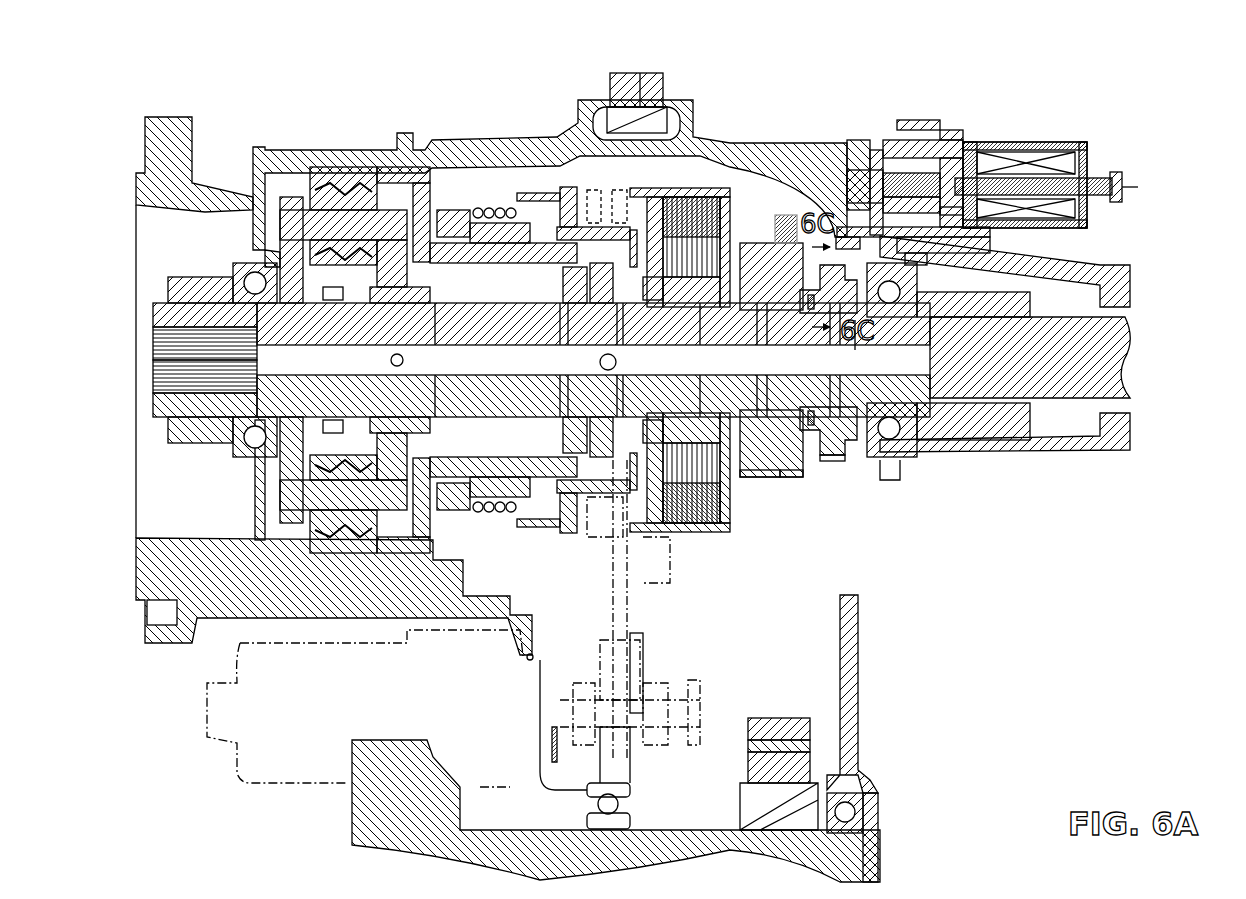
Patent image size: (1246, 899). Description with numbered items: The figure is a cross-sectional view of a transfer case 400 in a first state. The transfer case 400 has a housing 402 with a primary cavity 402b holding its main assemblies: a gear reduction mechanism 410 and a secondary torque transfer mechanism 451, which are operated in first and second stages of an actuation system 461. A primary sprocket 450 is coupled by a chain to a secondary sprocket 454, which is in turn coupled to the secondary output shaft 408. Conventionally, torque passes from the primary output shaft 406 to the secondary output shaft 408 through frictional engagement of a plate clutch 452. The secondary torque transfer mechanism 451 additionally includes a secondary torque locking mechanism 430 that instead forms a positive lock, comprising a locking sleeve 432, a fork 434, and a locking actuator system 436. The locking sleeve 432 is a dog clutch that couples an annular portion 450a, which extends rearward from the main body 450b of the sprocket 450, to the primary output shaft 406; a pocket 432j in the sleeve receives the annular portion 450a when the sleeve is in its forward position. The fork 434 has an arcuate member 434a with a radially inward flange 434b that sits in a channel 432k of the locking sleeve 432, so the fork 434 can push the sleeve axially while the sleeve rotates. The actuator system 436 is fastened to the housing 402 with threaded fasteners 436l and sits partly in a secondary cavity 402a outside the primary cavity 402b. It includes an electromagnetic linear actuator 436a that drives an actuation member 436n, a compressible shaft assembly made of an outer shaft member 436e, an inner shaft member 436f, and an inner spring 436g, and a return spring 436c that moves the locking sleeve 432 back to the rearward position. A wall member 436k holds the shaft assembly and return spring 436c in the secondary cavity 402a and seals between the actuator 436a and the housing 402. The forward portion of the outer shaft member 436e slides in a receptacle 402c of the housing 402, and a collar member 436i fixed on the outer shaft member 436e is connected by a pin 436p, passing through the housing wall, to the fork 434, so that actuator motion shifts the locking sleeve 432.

The transfer case 400 is at (1163, 86).
The housing 402 is at (405, 135).
The secondary cavity 402a is at (884, 210).
The primary cavity 402b is at (598, 185).
The receptacle 402c is at (846, 236).
The primary output shaft 406 is at (943, 348).
The secondary output shaft 408 is at (845, 850).
The gear reduction mechanism 410 is at (340, 136).
The secondary torque locking mechanism 430 is at (1055, 85).
The locking sleeve 432 is at (845, 457).
The pocket 432j is at (766, 229).
The channel 432k is at (838, 458).
The fork 434 is at (843, 185).
The arcuate member 434a is at (912, 440).
The inward flange 434b is at (905, 322).
The actuator system 436 is at (1078, 110).
The actuator 436a is at (1095, 152).
The return spring 436c is at (905, 172).
The outer shaft member 436e is at (960, 150).
The inner shaft member 436f is at (970, 158).
The inner spring 436g is at (875, 220).
The collar member 436i is at (1133, 293).
The wall member 436k is at (955, 238).
The threaded fasteners 436l is at (950, 158).
The actuation member 436n is at (1093, 200).
The pin 436p is at (920, 255).
The primary sprocket 450 is at (741, 188).
The annular portion 450a is at (790, 478).
The main body 450b is at (790, 480).
The secondary torque transfer mechanism 451 is at (688, 183).
The plate clutch 452 is at (658, 193).
The secondary sprocket 454 is at (808, 737).
The actuation system 461 is at (525, 190).